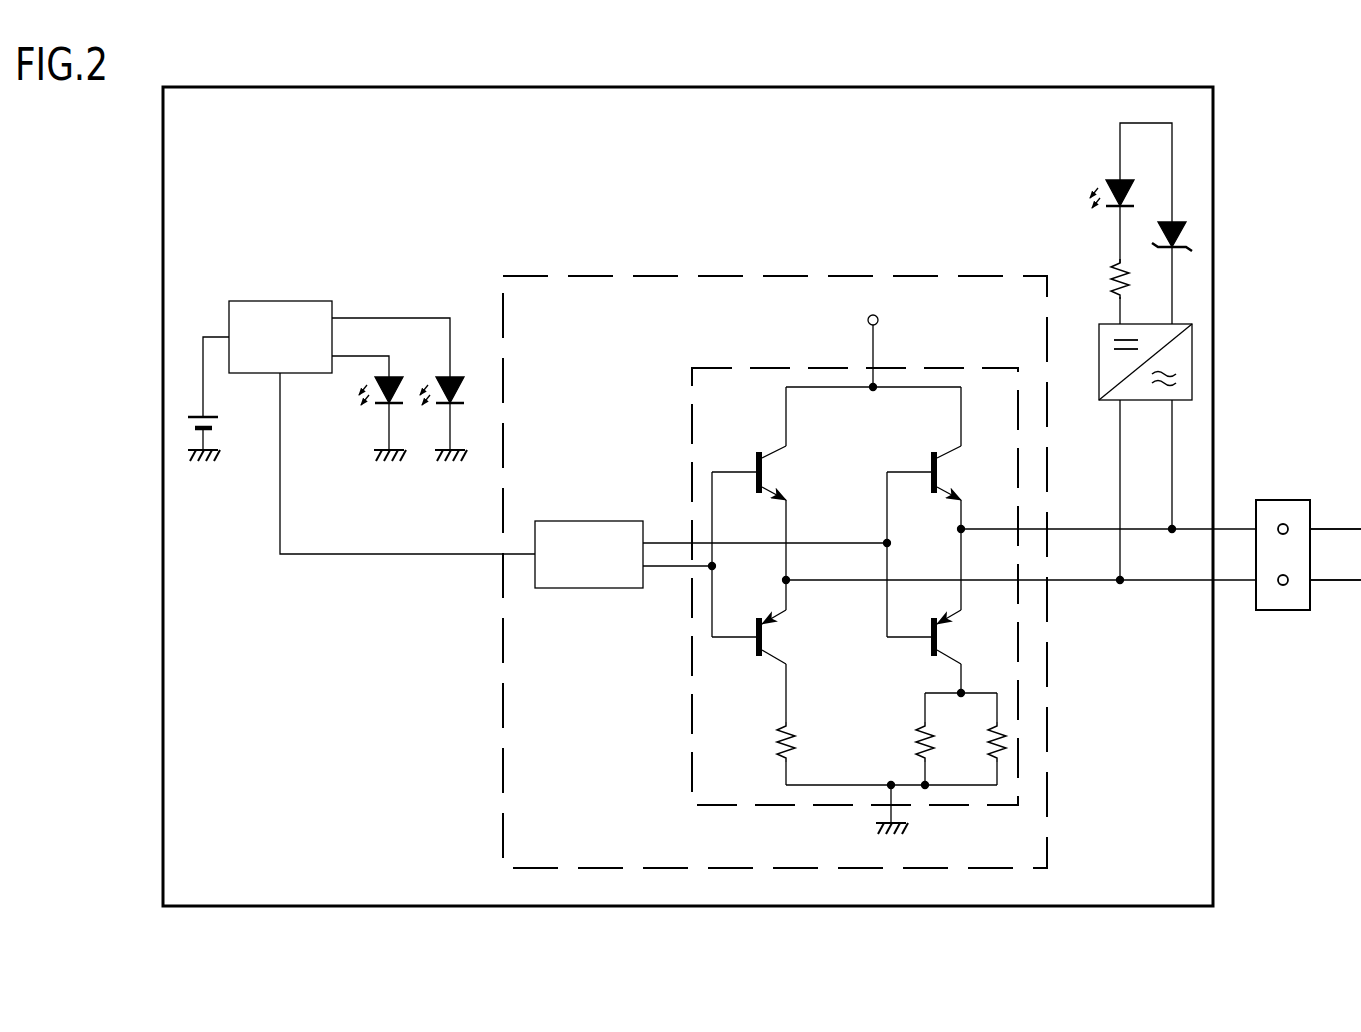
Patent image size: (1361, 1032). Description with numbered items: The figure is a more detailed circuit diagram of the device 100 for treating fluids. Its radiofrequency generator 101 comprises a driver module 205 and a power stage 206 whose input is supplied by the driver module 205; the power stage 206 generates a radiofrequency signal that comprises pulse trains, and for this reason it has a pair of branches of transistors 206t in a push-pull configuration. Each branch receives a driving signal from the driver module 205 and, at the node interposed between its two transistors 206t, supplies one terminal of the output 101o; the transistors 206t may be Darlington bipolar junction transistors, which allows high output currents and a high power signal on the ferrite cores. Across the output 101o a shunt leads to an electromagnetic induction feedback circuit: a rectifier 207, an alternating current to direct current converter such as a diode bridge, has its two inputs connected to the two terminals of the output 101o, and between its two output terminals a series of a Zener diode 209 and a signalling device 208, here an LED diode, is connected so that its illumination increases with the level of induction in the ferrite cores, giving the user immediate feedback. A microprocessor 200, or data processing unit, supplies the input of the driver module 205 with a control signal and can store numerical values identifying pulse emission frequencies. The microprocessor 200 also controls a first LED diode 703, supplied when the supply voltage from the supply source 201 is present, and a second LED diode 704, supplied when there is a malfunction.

The device 100 is at (160, 758).
The radiofrequency generator 101 is at (720, 276).
The output 101o is at (1288, 618).
The microprocessor 200 is at (296, 292).
The supply source 201 is at (190, 408).
The driver module 205 is at (567, 590).
The power stage 206 is at (690, 722).
The transistors 206t is at (757, 462).
The rectifier 207 is at (1185, 358).
The signalling device 208 is at (1098, 172).
The Zener diode 209 is at (1213, 218).
The first LED diode 703 is at (372, 420).
The second LED diode 704 is at (478, 370).